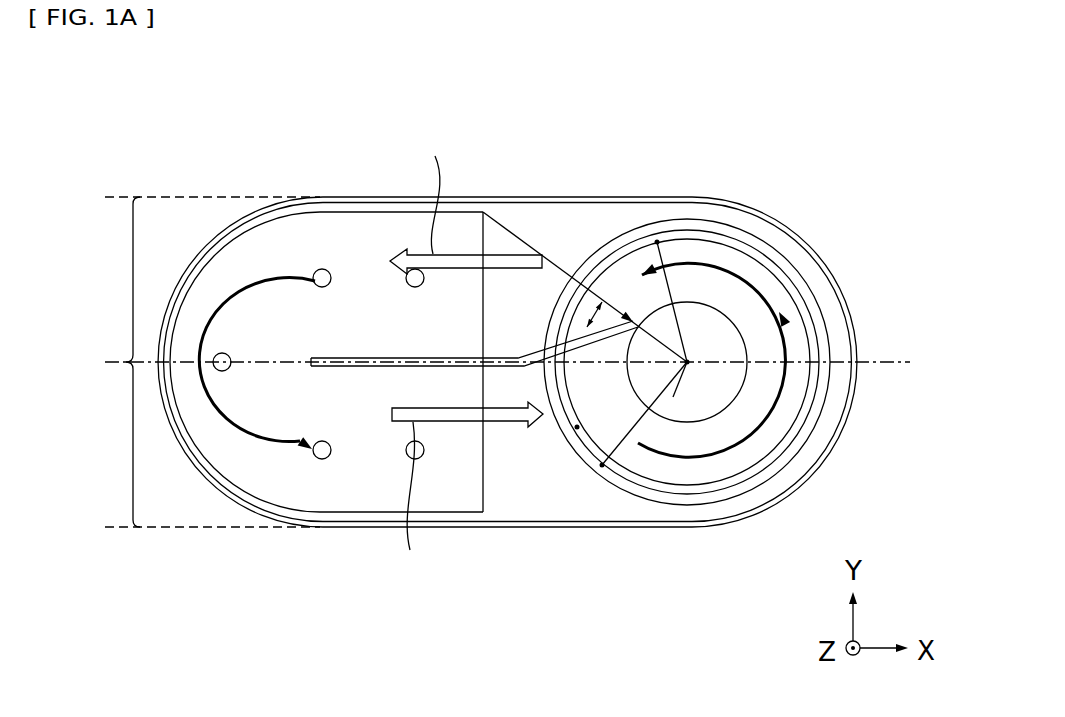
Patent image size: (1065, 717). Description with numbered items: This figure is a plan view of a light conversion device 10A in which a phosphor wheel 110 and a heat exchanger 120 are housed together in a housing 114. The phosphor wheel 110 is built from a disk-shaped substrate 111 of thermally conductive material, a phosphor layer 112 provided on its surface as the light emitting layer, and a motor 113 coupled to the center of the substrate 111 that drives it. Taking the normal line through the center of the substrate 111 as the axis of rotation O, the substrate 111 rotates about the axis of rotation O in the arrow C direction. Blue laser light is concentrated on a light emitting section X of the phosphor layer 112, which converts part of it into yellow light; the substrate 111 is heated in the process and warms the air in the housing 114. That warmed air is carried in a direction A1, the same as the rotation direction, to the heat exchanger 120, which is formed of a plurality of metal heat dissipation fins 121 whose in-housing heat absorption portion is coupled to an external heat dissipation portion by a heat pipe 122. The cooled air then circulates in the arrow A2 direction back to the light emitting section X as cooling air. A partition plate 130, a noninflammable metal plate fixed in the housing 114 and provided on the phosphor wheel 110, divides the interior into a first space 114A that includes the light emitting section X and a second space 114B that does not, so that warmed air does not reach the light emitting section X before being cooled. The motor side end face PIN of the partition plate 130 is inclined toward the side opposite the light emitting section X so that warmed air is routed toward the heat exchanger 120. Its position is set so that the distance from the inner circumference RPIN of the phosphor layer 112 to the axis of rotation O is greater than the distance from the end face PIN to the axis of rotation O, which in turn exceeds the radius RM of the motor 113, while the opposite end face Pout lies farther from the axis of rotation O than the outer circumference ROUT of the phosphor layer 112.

The light conversion device 10A is at (712, 97).
The phosphor wheel 110 is at (742, 212).
The substrate 111 is at (795, 268).
The phosphor layer 112 is at (800, 420).
The motor 113 is at (720, 410).
The housing 114 is at (553, 196).
The first space 114A is at (195, 444).
The second space 114B is at (195, 279).
The heat exchanger 120 is at (320, 211).
The heat dissipation fins 121 is at (223, 248).
The heat pipe 122 is at (322, 459).
The partition plate 130 is at (505, 368).
The direction A1 is at (783, 340).
The arrow A2 direction A2 is at (215, 455).
The arrow C direction C is at (760, 427).
The axis of rotation O is at (687, 362).
The light emitting section X is at (577, 427).
The end face P_OUT of the partition plate Pout is at (311, 366).
The motor side end face P_IN of the partition plate PIN is at (600, 314).
The inner circumference of the phosphor layer RPIN is at (670, 240).
The outer circumference of the phosphor layer ROUT is at (602, 465).
The radius of the motor RM is at (673, 397).